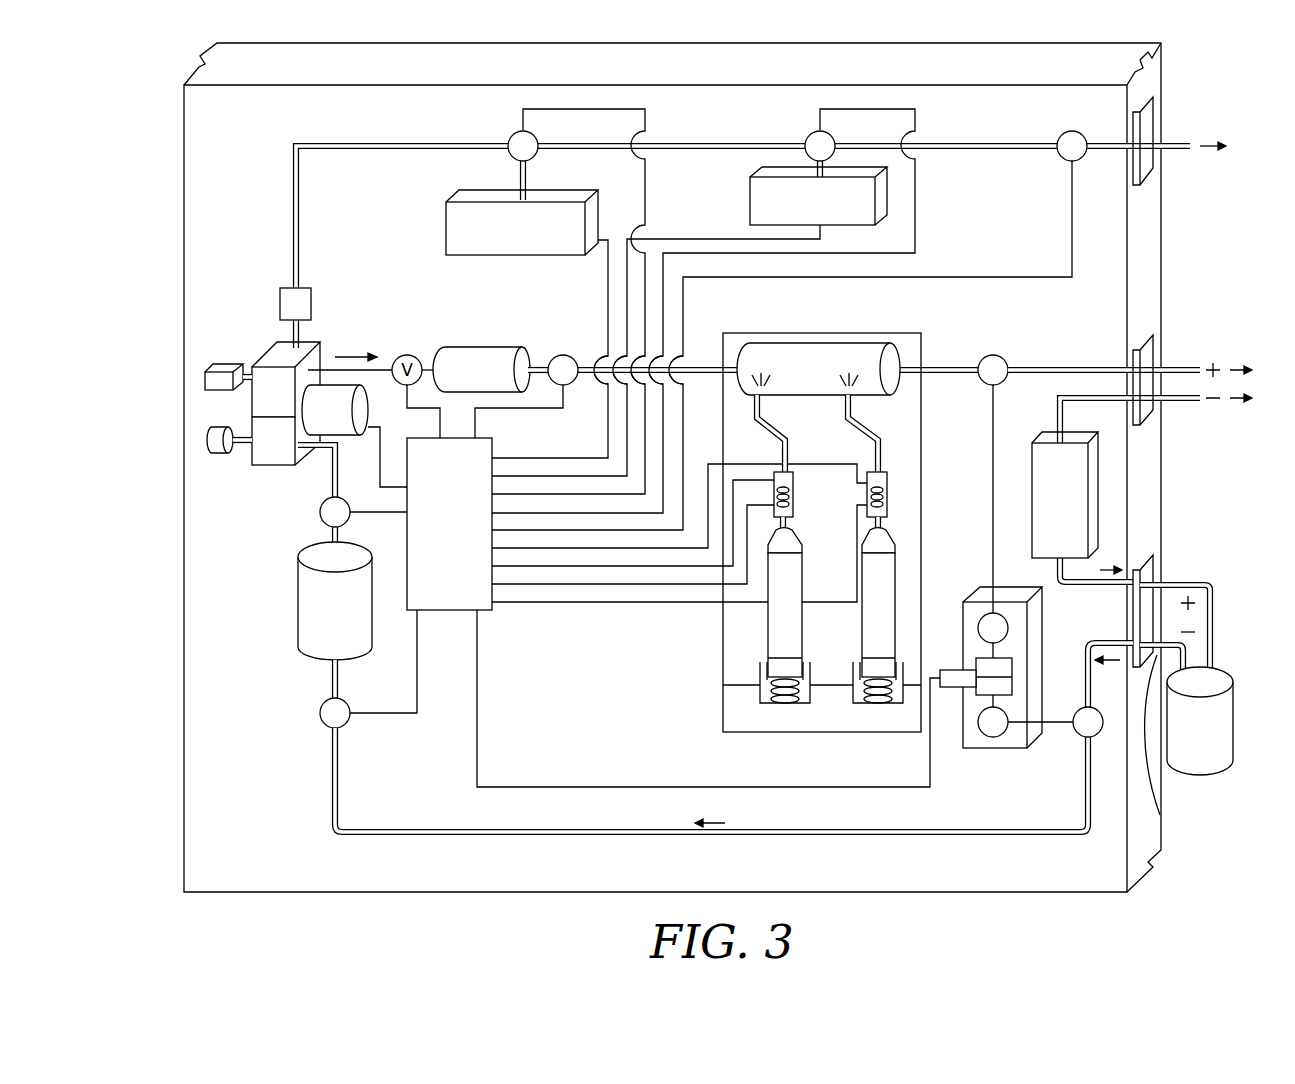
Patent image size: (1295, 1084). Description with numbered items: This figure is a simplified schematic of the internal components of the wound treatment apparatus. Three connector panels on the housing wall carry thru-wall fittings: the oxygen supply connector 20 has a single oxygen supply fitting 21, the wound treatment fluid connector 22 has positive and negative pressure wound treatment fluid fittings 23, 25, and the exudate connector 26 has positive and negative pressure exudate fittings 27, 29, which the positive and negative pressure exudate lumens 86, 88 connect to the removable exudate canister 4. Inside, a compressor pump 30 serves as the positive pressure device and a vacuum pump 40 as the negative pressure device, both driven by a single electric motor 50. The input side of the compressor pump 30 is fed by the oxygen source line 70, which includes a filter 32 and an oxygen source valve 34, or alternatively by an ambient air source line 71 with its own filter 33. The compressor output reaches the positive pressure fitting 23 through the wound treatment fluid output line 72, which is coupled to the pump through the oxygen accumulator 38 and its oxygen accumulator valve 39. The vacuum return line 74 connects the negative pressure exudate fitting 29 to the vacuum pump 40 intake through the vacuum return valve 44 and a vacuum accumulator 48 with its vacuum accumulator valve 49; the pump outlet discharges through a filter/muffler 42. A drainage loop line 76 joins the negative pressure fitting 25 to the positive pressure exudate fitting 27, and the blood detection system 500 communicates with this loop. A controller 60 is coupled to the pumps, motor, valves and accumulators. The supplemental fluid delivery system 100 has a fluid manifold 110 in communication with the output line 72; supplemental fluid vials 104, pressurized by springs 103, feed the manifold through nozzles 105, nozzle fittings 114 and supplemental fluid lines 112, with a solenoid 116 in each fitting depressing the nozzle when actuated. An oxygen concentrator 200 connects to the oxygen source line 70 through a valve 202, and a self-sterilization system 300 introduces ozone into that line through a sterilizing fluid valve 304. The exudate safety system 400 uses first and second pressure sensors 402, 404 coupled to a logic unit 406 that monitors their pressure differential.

The exudate canister 4 is at (1215, 728).
The oxygen supply connector 20 is at (1150, 112).
The oxygen supply fitting 21 is at (1172, 150).
The wound treatment fluid connector 22 is at (1152, 350).
The positive pressure wound treatment fluid fitting 23 is at (1175, 367).
The negative pressure wound treatment fluid fitting 25 is at (1175, 402).
The exudate connector 26 is at (1150, 572).
The positive pressure exudate fitting 27 is at (1187, 583).
The negative pressure exudate fitting 29 is at (1160, 808).
The compressor pump 30 is at (312, 340).
The filter 32 is at (292, 286).
The filter 33 is at (205, 368).
The oxygen source valve 34 is at (1084, 157).
The oxygen accumulator 38 is at (483, 347).
The oxygen accumulator valve 39 is at (565, 355).
The vacuum pump 40 is at (275, 458).
The filter/muffler 42 is at (212, 452).
The vacuum return valve 44 is at (320, 512).
The vacuum accumulator 48 is at (298, 598).
The vacuum accumulator valve 49 is at (320, 713).
The electric motor 50 is at (362, 398).
The controller 60 is at (450, 612).
The oxygen source line 70 is at (350, 143).
The ambient air source line 71 is at (252, 382).
The wound treatment fluid output line 72 is at (1075, 365).
The vacuum return line 74 is at (437, 828).
The drainage loop line 76 is at (1070, 390).
The positive pressure exudate lumen 86 is at (1212, 610).
The negative pressure exudate lumen 88 is at (1190, 650).
The supplemental fluid delivery system 100 is at (723, 672).
The spring 103 is at (800, 700).
The supplemental fluid vial 104 is at (796, 585).
The nozzle 105 is at (796, 540).
The fluid manifold 110 is at (800, 343).
The supplemental fluid line 112 is at (775, 430).
The nozzle fitting 114 is at (793, 475).
The solenoid 116 is at (789, 497).
The oxygen concentrator 200 is at (462, 222).
The valve 202 is at (512, 134).
The self-sterilization system 300 is at (760, 200).
The sterilizing fluid valve 304 is at (808, 133).
The exudate safety system 400 is at (963, 735).
The first pressure sensor 402 is at (1010, 630).
The second pressure sensor 404 is at (997, 737).
The logic unit 406 is at (1003, 667).
The blood detection system 500 is at (1042, 462).